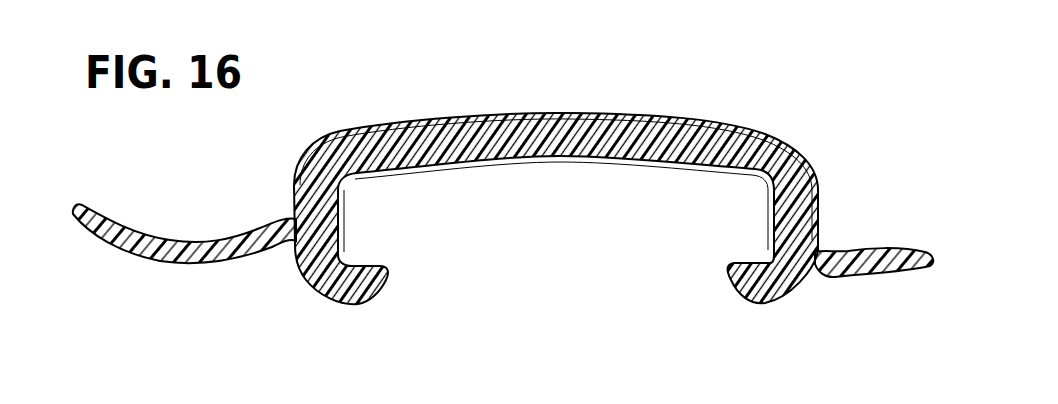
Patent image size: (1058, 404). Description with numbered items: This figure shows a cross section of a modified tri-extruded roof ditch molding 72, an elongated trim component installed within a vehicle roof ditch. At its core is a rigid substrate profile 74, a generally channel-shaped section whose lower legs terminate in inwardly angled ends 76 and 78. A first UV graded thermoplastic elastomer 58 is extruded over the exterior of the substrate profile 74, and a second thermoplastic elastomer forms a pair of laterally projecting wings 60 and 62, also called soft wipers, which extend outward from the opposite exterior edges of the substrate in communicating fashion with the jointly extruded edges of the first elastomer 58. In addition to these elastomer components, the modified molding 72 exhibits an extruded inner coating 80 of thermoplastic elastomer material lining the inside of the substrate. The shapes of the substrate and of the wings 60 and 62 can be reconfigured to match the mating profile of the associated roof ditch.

The first UV graded thermoplastic elastomer 58 is at (535, 112).
The laterally projecting wing 60 is at (160, 240).
The laterally projecting wing 62 is at (903, 248).
The modified tri-extruded roof ditch molding 72 is at (796, 103).
The substrate profile 74 is at (580, 143).
The inwardly angled end 76 is at (367, 286).
The inwardly angled end 78 is at (740, 288).
The extruded inner coating 80 is at (466, 165).